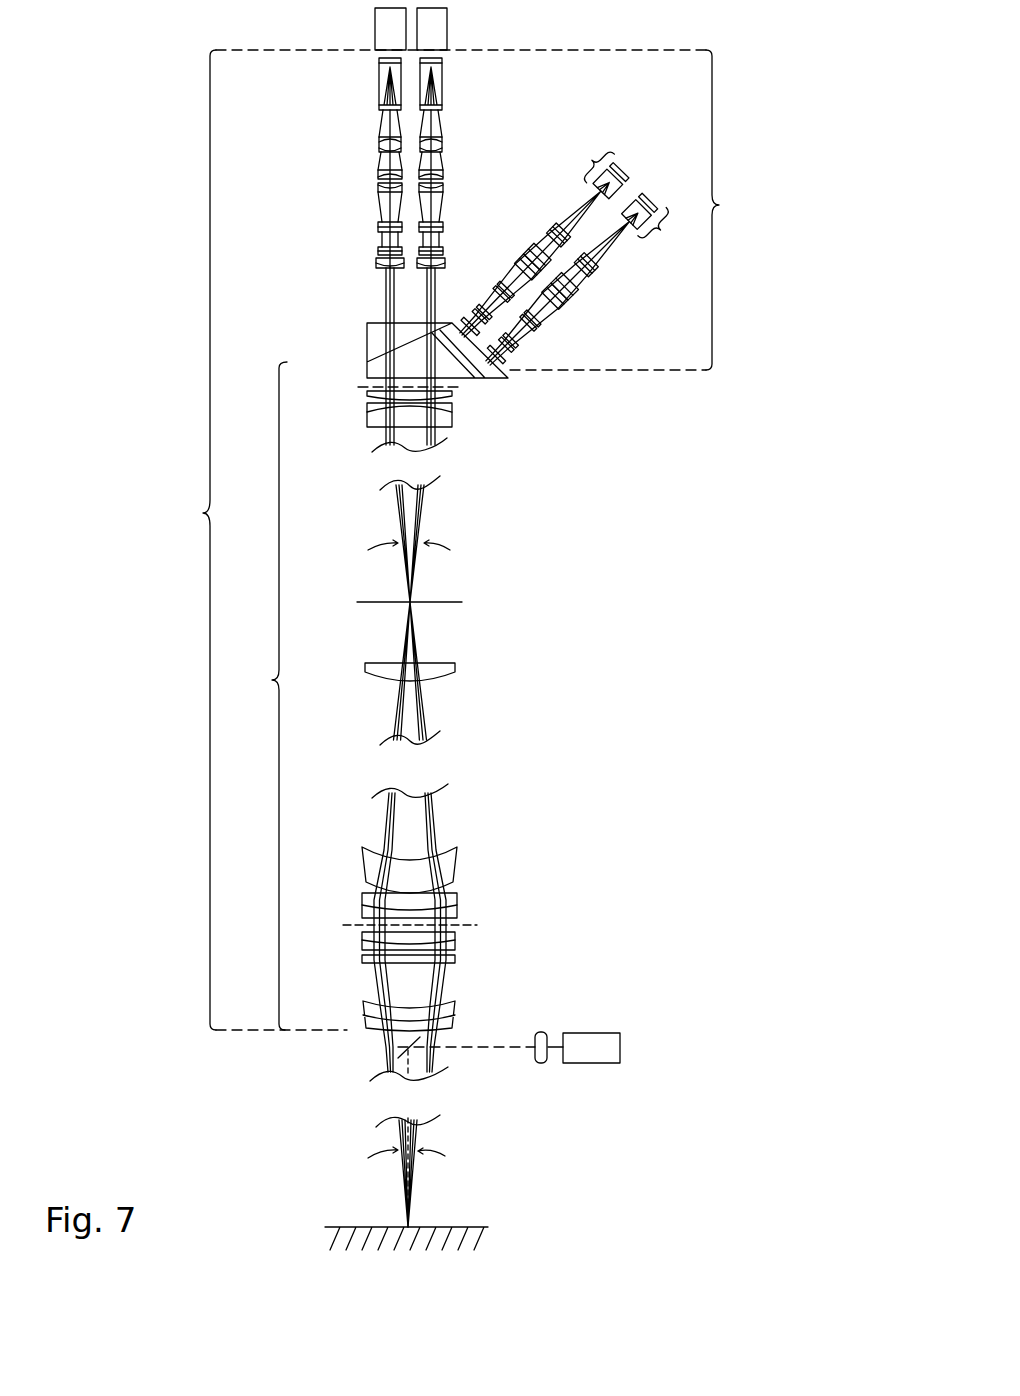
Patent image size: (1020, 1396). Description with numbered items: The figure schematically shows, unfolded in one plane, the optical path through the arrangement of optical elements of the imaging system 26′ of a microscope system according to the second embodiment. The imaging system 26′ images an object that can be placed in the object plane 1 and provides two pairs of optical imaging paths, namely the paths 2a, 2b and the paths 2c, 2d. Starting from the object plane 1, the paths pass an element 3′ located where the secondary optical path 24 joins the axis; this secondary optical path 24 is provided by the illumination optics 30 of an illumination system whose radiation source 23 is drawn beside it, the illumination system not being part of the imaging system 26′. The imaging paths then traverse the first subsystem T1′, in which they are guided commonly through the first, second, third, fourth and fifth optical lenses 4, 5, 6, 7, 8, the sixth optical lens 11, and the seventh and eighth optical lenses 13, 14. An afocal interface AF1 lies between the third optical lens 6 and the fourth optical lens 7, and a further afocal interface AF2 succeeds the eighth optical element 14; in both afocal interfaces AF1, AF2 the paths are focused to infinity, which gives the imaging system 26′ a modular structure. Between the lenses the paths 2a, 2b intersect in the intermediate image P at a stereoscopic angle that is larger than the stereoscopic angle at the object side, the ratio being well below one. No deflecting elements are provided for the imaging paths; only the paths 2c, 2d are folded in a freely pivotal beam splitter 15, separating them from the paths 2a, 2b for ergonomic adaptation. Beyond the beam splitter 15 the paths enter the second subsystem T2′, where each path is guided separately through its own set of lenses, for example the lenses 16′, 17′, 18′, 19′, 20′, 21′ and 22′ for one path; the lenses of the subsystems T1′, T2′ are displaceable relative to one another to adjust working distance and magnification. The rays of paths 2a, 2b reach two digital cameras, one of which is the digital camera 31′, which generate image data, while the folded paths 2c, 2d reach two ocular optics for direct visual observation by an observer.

The object plane 1 is at (480, 1226).
The optical imaging path 2a is at (430, 298).
The optical imaging path 2b is at (386, 298).
The optical imaging path 2c is at (618, 240).
The optical imaging path 2d is at (583, 212).
The beam splitter 3′ is at (398, 1050).
The first optical lens 4 is at (455, 1009).
The second optical lens 5 is at (455, 960).
The third optical lens 6 is at (455, 940).
The fourth optical lens 7 is at (457, 905).
The fifth optical lens 8 is at (455, 866).
The sixth optical lens 11 is at (455, 668).
The seventh optical lens 13 is at (367, 412).
The eighth optical lens 14 is at (358, 388).
The beam splitter 15 is at (367, 360).
The optical lens 16′ is at (445, 263).
The optical lens 17′ is at (443, 250).
The optical lens 18′ is at (443, 225).
The optical lens 19′ is at (443, 188).
The optical lens 20′ is at (443, 174).
The optical lens 21′ is at (443, 145).
The optical lens 22′ is at (443, 85).
The radiation source 23 is at (595, 1064).
The secondary optical path 24 is at (487, 1050).
The imaging system 26′ is at (441, 540).
The illumination optics 30 is at (542, 1064).
The digital camera 31′ is at (448, 30).
The afocal interface AF1 is at (348, 925).
The afocal interface AF2 is at (458, 390).
The intermediate image P is at (370, 600).
The first subsystem T1′ is at (266, 696).
The second subsystem T2′ is at (630, 210).